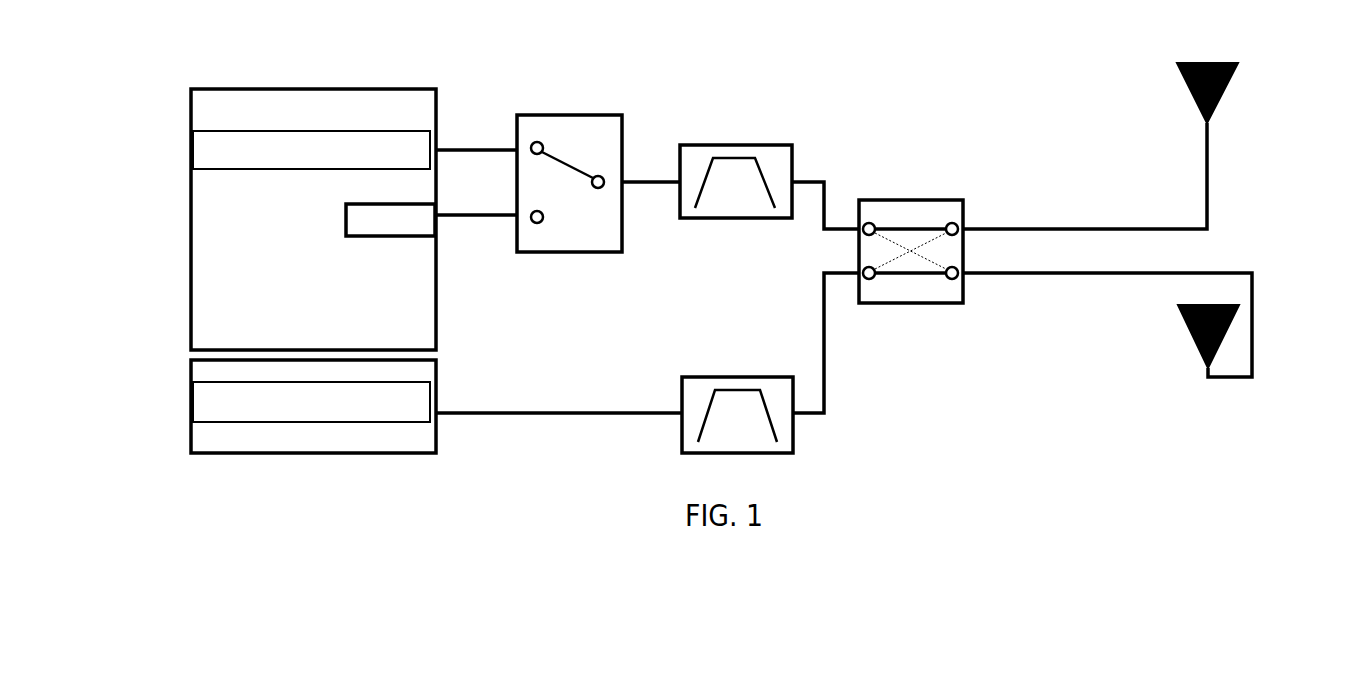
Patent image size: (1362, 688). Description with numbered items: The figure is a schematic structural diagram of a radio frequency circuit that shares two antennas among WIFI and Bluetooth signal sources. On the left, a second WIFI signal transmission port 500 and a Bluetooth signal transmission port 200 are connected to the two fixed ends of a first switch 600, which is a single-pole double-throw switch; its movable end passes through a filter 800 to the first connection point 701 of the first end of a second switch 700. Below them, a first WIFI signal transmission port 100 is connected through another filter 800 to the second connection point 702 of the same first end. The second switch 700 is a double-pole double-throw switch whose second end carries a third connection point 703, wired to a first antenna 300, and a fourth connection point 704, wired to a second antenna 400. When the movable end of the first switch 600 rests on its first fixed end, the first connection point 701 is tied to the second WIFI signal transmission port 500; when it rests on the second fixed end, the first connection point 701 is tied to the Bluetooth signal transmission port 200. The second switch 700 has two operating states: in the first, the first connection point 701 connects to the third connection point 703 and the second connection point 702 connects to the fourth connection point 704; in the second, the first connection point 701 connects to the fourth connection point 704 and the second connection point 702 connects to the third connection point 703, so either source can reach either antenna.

The first WIFI signal transmission port 100 is at (190, 391).
The Bluetooth signal transmission port 200 is at (444, 227).
The first antenna 300 is at (1215, 75).
The second antenna 400 is at (1182, 322).
The second WIFI signal transmission port 500 is at (190, 138).
The first switch 600 is at (565, 158).
The second switch 700 is at (940, 251).
The first connection point 701 is at (870, 218).
The second connection point 702 is at (877, 280).
The third connection point 703 is at (958, 218).
The fourth connection point 704 is at (975, 292).
The filter 800 is at (710, 160).